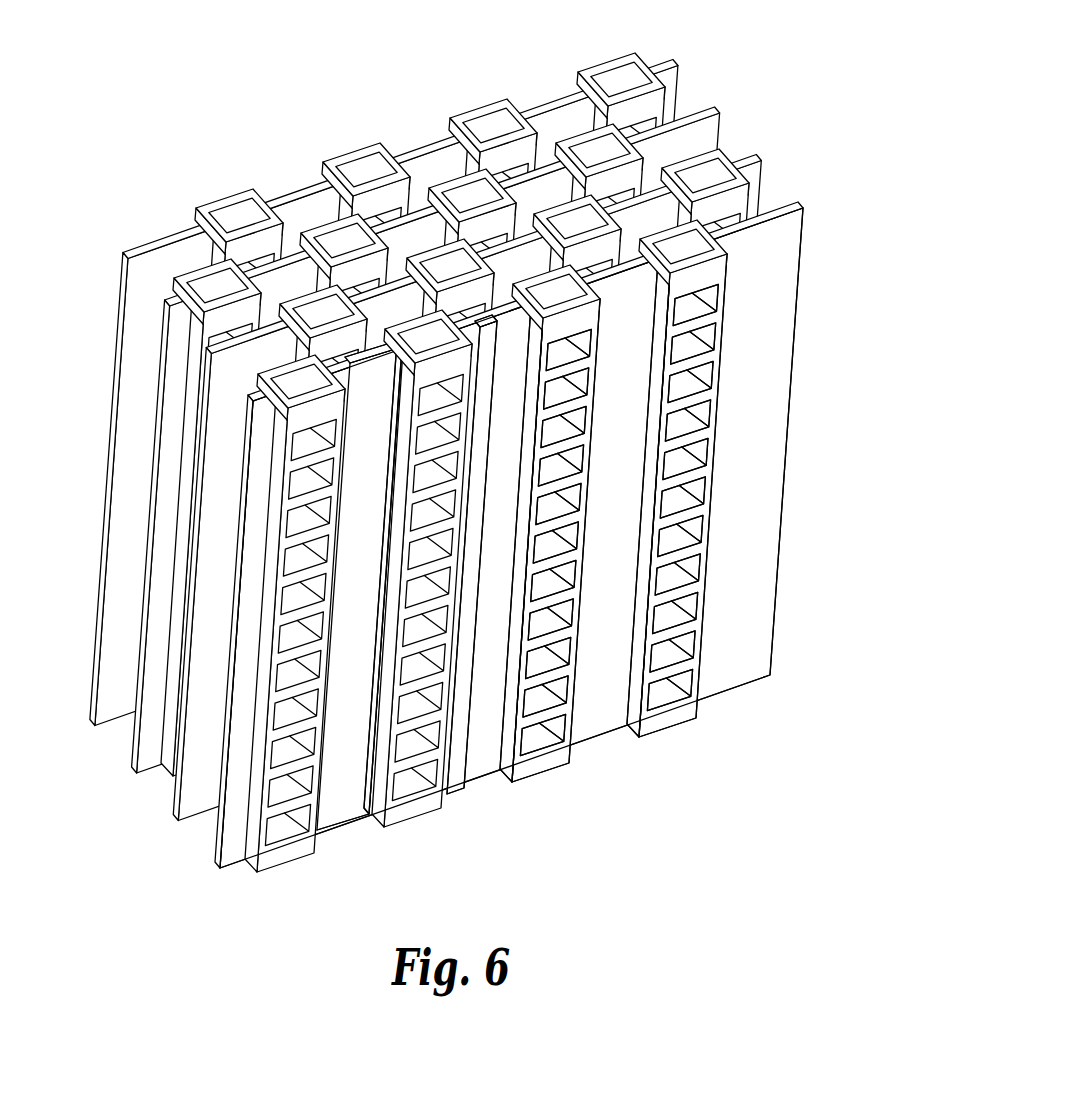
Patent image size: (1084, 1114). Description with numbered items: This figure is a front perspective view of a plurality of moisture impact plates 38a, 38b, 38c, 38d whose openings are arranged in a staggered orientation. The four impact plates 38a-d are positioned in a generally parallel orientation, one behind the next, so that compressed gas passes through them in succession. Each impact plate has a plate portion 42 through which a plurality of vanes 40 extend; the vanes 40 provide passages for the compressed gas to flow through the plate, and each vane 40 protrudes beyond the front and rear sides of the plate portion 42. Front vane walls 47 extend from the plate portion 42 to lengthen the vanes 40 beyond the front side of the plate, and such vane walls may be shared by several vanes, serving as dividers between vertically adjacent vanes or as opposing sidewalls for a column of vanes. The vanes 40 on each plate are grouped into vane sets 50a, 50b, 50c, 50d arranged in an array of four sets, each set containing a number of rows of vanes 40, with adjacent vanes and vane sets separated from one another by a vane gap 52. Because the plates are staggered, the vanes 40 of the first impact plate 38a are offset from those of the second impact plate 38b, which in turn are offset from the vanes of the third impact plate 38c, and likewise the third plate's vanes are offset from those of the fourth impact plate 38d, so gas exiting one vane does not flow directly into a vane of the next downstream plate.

The first impact plate 38a is at (233, 832).
The second impact plate 38b is at (193, 763).
The third impact plate 38c is at (143, 715).
The fourth impact plate 38d is at (121, 680).
The vane 40 is at (530, 740).
The plate portion 42 is at (444, 482).
The front vane wall 47 is at (630, 737).
The vane set 50a is at (283, 373).
The vane set 50b is at (410, 333).
The vane set 50c is at (548, 285).
The vane set 50d is at (708, 277).
The vane gap 52 is at (340, 782).